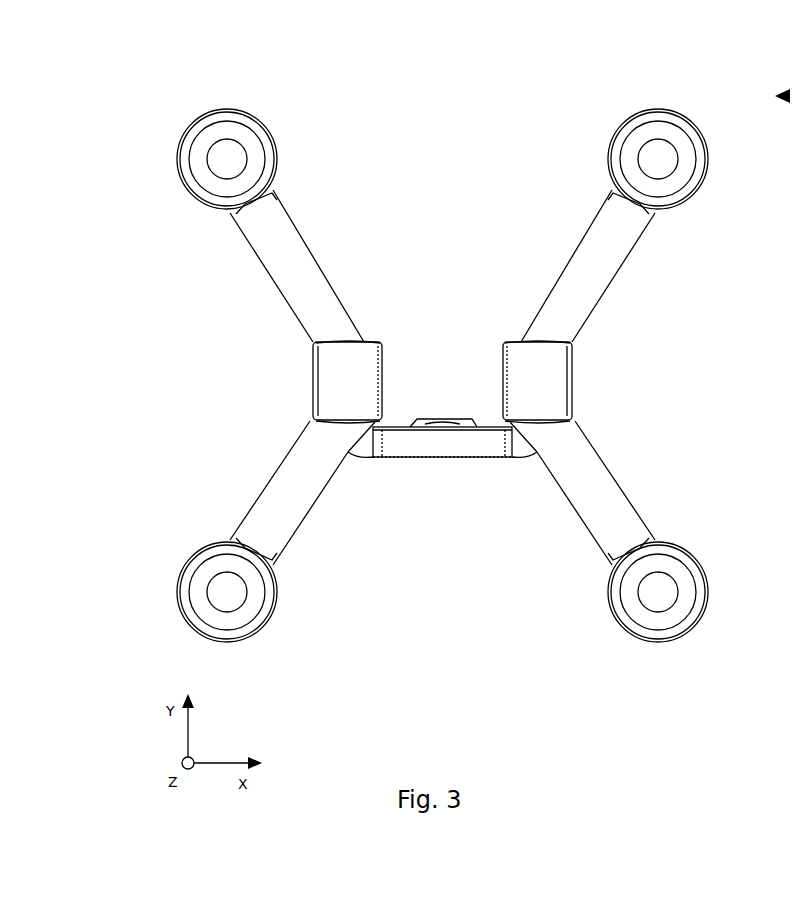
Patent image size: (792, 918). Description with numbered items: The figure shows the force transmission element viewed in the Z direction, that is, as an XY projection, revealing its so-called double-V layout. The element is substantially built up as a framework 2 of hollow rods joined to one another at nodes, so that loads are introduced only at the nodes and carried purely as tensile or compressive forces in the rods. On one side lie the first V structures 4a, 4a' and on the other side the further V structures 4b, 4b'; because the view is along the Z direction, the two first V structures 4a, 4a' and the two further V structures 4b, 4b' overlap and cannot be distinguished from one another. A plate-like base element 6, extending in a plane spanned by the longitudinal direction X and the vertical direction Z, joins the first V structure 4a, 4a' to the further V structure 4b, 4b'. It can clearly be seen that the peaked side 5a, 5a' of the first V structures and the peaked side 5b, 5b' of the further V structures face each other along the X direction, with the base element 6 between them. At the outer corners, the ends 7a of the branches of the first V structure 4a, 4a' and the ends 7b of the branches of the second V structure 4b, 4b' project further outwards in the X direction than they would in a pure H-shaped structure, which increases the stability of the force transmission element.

The framework 2 is at (633, 498).
The first V structure 4a is at (626, 287).
The first V structure 4a' is at (591, 468).
The further V structure 4b is at (257, 287).
The further V structure 4b' is at (293, 468).
The peaked side 5a is at (521, 439).
The peaked side 5a' is at (537, 382).
The peaked side 5b is at (373, 336).
The peaked side 5b' is at (348, 382).
The base element 6 is at (468, 457).
The ends of the branches 7a is at (655, 213).
The ends of the branches 7b is at (232, 213).